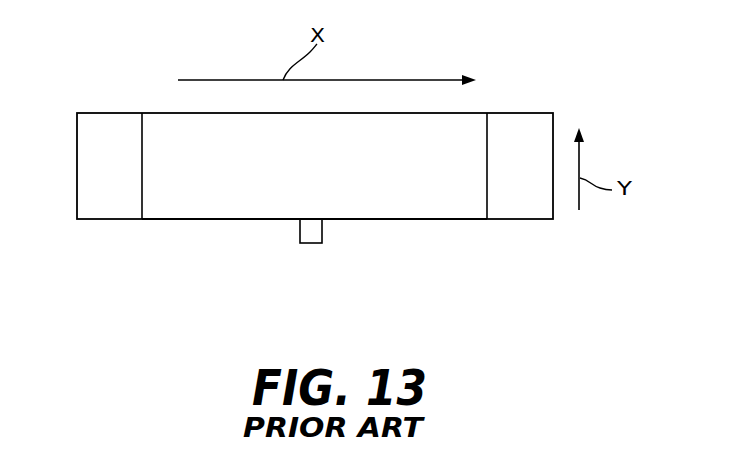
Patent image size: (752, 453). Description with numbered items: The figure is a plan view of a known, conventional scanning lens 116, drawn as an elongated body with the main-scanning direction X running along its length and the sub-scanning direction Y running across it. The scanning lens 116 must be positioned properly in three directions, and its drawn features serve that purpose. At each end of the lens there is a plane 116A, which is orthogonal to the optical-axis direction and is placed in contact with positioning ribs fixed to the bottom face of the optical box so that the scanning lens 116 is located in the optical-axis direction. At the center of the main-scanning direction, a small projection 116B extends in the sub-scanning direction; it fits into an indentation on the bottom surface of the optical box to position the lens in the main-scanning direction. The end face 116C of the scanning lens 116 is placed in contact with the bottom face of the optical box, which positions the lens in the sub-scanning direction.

The scanning lens 116 is at (533, 98).
The plane 116A is at (112, 208).
The projection 116B is at (313, 230).
The end face 116C is at (424, 220).